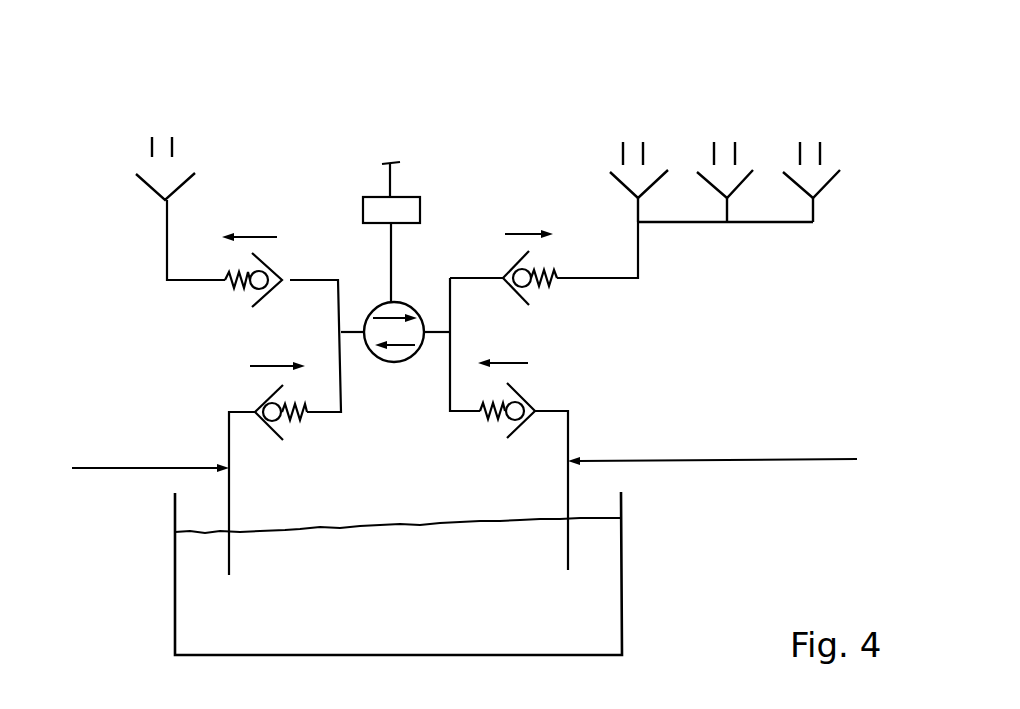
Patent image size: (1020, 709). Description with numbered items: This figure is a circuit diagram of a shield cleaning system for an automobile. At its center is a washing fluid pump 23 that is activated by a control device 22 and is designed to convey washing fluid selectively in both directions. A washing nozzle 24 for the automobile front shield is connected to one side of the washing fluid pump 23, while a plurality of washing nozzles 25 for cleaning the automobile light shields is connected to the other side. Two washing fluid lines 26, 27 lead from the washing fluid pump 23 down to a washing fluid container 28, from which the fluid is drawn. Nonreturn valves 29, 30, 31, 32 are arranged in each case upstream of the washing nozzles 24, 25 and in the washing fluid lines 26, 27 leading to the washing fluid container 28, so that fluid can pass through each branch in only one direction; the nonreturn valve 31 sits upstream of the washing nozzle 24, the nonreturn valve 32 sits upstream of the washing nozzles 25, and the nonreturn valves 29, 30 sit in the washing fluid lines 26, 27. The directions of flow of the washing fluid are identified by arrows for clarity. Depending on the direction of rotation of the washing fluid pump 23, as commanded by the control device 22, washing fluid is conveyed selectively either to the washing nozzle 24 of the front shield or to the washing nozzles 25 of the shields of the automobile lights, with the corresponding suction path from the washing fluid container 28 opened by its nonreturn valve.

The control device 22 is at (405, 207).
The washing fluid pump 23 is at (418, 333).
The washing nozzle 24 is at (153, 180).
The washing nozzles 25 is at (728, 177).
The washing fluid line 26 is at (134, 471).
The washing fluid line 27 is at (730, 459).
The washing fluid container 28 is at (603, 572).
The nonreturn valve 29 is at (258, 411).
The nonreturn valve 30 is at (540, 407).
The nonreturn valve 31 is at (252, 293).
The nonreturn valve 32 is at (550, 290).